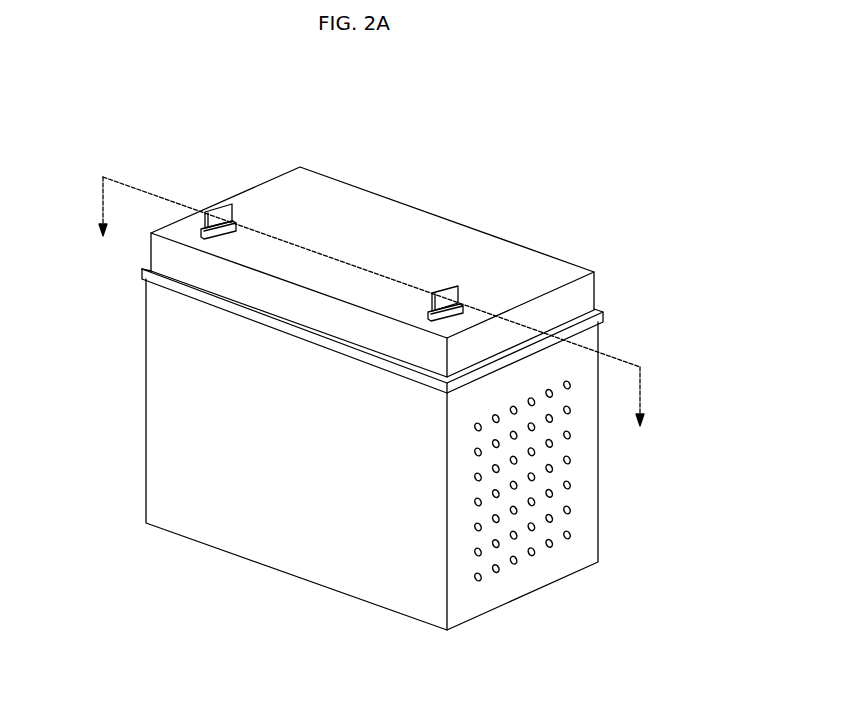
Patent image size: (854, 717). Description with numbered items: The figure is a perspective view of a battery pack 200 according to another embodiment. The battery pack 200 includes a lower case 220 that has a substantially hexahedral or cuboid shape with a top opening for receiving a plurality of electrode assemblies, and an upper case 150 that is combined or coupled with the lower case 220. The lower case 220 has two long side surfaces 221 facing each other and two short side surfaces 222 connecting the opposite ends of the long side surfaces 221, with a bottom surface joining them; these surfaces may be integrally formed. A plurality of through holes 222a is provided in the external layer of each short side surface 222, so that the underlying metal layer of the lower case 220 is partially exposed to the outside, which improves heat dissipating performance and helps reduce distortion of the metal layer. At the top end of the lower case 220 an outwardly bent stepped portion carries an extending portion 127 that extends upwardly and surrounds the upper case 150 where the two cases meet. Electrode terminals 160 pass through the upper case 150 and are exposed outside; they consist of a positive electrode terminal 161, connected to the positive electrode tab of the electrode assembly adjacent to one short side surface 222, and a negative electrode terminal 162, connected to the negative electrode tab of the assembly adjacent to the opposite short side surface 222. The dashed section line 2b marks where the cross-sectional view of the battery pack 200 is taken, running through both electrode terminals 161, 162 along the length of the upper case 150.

The battery pack 200 is at (602, 194).
The upper case 150 is at (494, 262).
The electrode terminals 160 is at (465, 132).
The positive electrode terminal 161 is at (224, 211).
The negative electrode terminal 162 is at (453, 286).
The extending portion 127 is at (606, 316).
The lower case 220 is at (586, 519).
The long side surfaces 221 is at (306, 561).
The short side surfaces 222 is at (503, 590).
The through holes 222a is at (567, 467).
The section line 2b- 2b is at (369, 318).